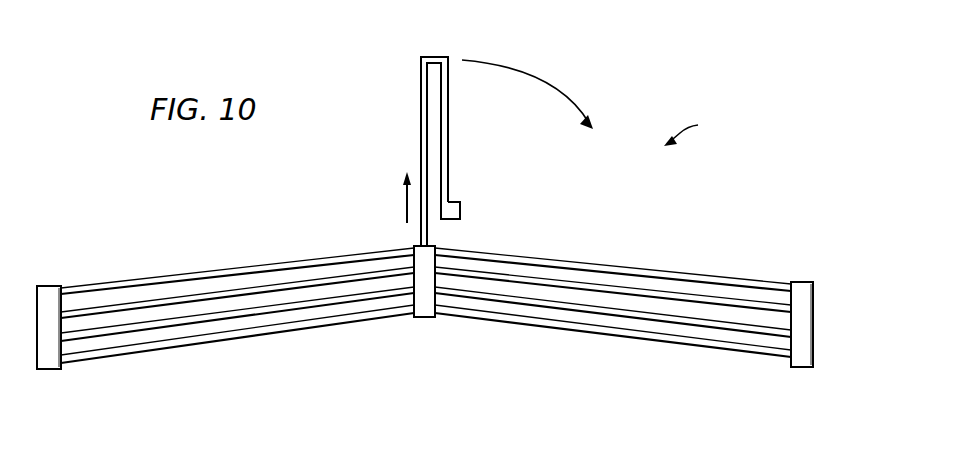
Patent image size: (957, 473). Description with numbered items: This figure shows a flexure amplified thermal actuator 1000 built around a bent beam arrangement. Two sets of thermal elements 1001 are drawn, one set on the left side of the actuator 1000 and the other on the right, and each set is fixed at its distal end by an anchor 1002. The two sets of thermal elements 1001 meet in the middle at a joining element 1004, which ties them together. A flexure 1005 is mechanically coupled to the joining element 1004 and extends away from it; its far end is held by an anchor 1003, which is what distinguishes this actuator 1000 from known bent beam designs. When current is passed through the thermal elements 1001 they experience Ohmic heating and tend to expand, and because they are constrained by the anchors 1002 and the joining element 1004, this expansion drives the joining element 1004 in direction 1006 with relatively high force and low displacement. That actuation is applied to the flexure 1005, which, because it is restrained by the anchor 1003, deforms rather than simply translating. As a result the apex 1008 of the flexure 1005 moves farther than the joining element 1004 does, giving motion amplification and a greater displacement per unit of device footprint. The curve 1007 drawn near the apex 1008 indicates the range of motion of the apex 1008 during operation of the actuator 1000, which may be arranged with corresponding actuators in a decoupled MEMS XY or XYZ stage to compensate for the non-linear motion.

The flexure amplified thermal actuator 1000 is at (707, 130).
The thermal elements 1001 is at (160, 297).
The anchors 1002 is at (50, 369).
The anchor 1003 is at (460, 212).
The joining element 1004 is at (422, 317).
The flexure 1005 is at (421, 147).
The direction 1006 is at (404, 204).
The curve 1007 is at (531, 78).
The apex 1008 is at (433, 57).